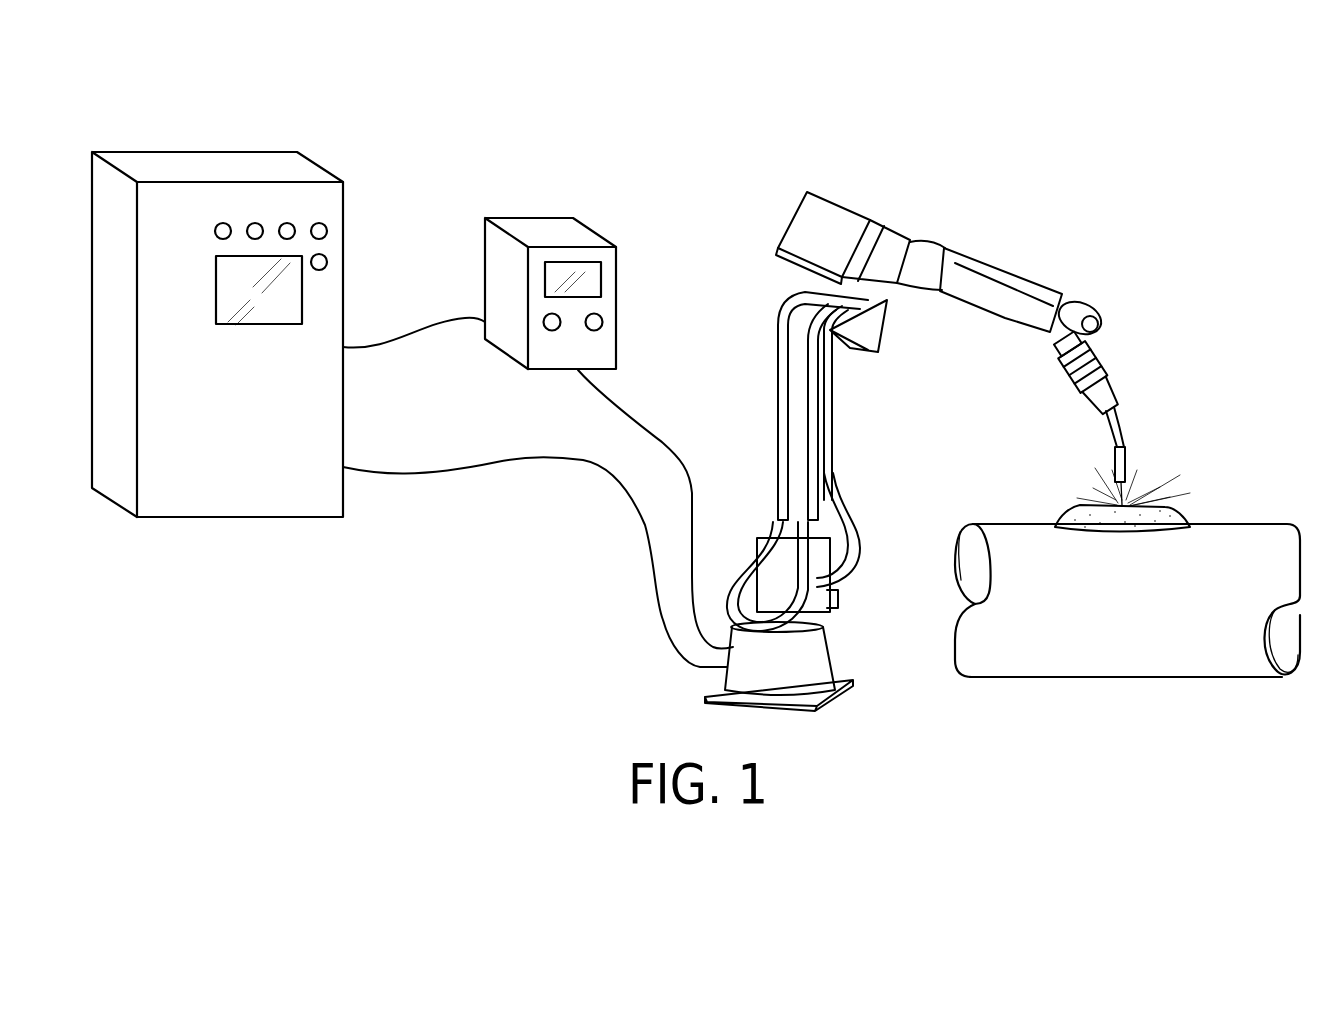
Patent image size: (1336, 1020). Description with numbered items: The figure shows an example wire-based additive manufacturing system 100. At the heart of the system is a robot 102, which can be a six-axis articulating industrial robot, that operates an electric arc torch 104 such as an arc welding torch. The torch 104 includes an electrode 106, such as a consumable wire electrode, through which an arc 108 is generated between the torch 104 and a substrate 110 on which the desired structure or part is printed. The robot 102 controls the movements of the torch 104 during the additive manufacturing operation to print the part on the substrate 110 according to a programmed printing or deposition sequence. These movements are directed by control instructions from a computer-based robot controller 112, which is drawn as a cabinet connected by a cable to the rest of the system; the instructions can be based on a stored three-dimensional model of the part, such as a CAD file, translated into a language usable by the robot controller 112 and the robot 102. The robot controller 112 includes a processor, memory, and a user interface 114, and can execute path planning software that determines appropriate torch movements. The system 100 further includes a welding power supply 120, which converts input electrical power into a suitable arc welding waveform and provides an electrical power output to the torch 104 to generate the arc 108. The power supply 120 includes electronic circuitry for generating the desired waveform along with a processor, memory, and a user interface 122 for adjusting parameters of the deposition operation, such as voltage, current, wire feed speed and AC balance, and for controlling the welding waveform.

The additive manufacturing system 100 is at (1188, 142).
The robot 102 is at (970, 253).
The electric arc torch 104 is at (1112, 388).
The electrode 106 is at (1110, 485).
The arc 108 is at (1130, 495).
The substrate 110 is at (1262, 523).
The robot controller 112 is at (203, 151).
The user interface 114 is at (335, 242).
The welding power supply 120 is at (540, 217).
The user interface 122 is at (610, 269).